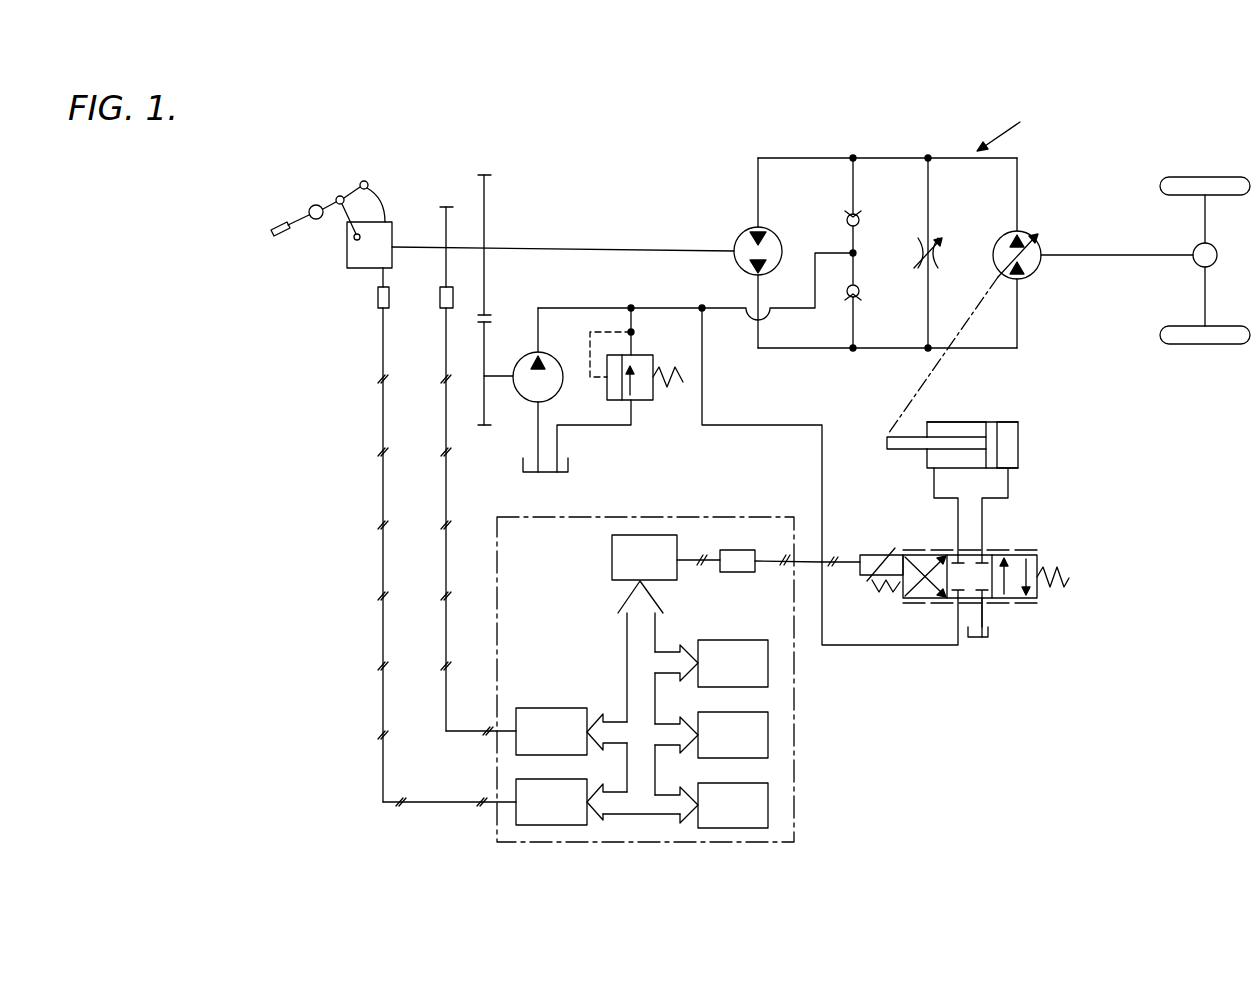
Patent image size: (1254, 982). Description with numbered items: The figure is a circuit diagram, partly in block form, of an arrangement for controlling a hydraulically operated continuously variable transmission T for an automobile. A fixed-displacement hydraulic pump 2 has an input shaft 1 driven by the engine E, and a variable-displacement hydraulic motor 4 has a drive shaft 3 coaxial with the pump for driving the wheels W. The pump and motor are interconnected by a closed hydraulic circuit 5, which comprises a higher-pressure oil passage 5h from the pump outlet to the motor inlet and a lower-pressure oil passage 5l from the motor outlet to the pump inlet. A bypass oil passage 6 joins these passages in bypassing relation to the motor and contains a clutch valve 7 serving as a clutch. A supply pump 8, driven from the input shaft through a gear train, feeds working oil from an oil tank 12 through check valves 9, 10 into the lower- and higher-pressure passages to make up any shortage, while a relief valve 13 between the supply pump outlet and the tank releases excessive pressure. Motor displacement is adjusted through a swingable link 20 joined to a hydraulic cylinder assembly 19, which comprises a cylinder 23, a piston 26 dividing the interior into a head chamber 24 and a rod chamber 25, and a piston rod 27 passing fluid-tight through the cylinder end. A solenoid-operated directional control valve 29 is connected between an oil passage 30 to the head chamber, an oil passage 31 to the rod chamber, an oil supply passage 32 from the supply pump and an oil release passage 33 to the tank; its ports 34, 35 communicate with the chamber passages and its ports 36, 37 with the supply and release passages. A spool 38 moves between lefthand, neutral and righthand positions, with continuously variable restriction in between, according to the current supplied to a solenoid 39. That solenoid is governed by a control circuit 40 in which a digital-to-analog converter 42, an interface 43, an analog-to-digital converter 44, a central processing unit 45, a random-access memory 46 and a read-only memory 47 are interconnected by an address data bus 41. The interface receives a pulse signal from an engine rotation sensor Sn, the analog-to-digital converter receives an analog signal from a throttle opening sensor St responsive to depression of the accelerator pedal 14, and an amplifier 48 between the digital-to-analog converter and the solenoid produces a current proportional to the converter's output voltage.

The input shaft 1 is at (568, 249).
The engine E is at (363, 264).
The accelerator pedal 14 is at (276, 228).
The throttle opening sensor St is at (378, 297).
The engine rotation sensor Sn is at (440, 297).
The hydraulic pump 2 is at (746, 239).
The drive shaft 3 is at (1125, 255).
The hydraulic motor 4 is at (1035, 270).
The closed hydraulic circuit 5 is at (1018, 190).
The lower-pressure oil passage 5l is at (790, 158).
The higher-pressure oil passage 5h is at (805, 348).
The bypass oil passage 6 is at (930, 205).
The clutch valve 7 is at (917, 253).
The supply pump 8 is at (526, 399).
The check valve 9 is at (860, 216).
The check valve 10 is at (856, 298).
The oil tank 12 is at (568, 465).
The relief valve 13 is at (645, 355).
The hydraulic cylinder assembly 19 is at (992, 422).
The swingable link 20 is at (949, 366).
The cylinder 23 is at (972, 422).
The head chamber 24 is at (1013, 441).
The rod chamber 25 is at (940, 430).
The piston 26 is at (1000, 431).
The piston rod 27 is at (908, 449).
The solenoid-operated directional control valve 29 is at (1033, 543).
The oil passage 30 is at (1008, 488).
The oil passage 31 is at (934, 496).
The oil supply passage 32 is at (870, 645).
The oil release passage 33 is at (988, 612).
The port 34 is at (985, 550).
The port 35 is at (960, 550).
The port 36 is at (957, 604).
The port 37 is at (986, 605).
The spool 38 is at (1044, 566).
The solenoid 39 is at (884, 553).
The control circuit 40 is at (796, 757).
The address data bus 41 is at (627, 663).
The digital-to-analog converter 42 is at (654, 572).
The interface 43 is at (560, 746).
The analog-to-digital converter 44 is at (560, 816).
The central processing unit 45 is at (742, 678).
The random-access memory 46 is at (742, 749).
The read-only memory 47 is at (742, 820).
The amplifier 48 is at (738, 572).
The continuously variable transmission T is at (1010, 127).
The wheels W is at (1208, 186).